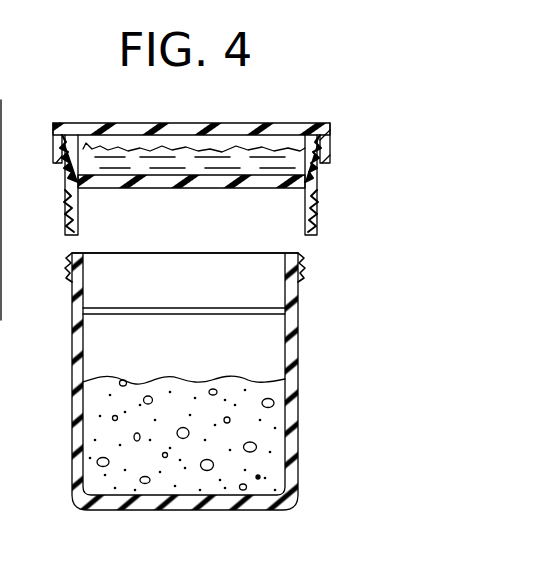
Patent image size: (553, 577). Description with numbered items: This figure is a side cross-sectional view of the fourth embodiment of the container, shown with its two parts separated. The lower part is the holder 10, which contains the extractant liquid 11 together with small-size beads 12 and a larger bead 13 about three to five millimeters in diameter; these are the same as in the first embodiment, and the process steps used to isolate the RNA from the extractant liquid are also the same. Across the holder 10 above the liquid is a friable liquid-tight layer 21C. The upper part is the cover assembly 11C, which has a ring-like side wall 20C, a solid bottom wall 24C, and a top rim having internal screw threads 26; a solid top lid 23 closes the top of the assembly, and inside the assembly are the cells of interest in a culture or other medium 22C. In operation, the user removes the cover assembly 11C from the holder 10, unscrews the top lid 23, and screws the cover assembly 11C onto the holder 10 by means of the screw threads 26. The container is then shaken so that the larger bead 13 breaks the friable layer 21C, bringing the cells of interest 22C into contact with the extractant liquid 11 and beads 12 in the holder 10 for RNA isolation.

The holder 10 is at (290, 349).
The extractant liquid 11 is at (275, 437).
The small-size beads 12 is at (258, 477).
The larger bead 13 is at (274, 403).
The cover assembly 11C is at (204, 156).
The ring-like side wall 20C is at (57, 163).
The friable liquid-tight layer 21C is at (263, 310).
The cells of interest in a culture or other medium 22C is at (287, 171).
The top plate 23 is at (290, 133).
The solid bottom wall 24C is at (310, 194).
The internal screw threads 26 is at (85, 152).